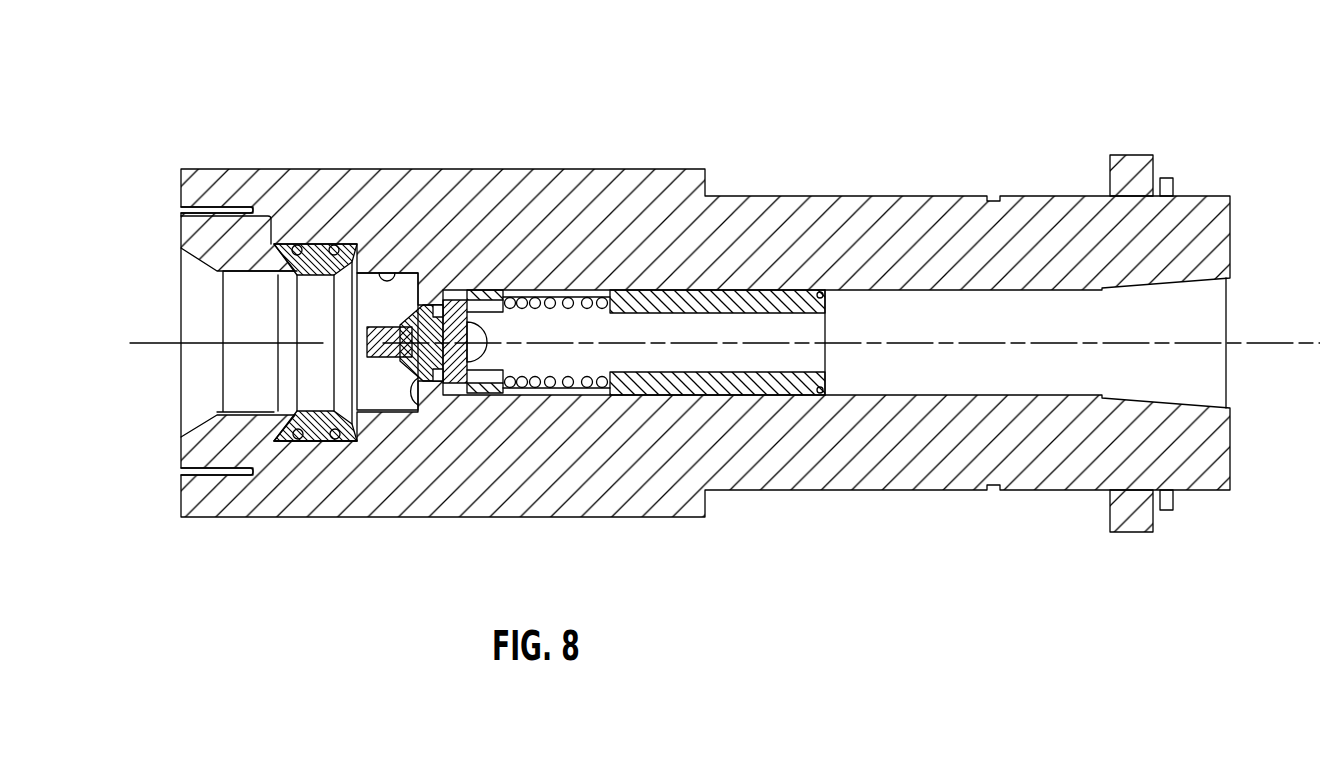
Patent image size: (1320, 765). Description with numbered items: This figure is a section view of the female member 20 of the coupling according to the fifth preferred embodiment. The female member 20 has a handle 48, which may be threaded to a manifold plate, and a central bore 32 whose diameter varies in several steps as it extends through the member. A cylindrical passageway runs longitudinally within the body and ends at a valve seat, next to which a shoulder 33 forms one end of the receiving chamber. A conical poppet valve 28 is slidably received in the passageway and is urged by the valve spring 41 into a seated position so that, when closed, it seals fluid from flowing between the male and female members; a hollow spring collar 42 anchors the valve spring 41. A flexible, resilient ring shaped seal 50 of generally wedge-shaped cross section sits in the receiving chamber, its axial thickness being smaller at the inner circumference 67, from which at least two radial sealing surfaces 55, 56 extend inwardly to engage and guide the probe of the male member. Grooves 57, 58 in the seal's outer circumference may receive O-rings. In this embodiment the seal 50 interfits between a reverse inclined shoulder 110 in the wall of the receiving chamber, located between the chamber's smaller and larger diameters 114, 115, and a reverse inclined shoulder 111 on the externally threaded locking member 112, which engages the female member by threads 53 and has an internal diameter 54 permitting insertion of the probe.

The female member 20 is at (693, 140).
The poppet valve 28 is at (437, 297).
The central bore 32 is at (768, 392).
The shoulder 33 is at (421, 400).
The valve spring 41 is at (596, 260).
The hollow spring collar 42 is at (568, 300).
The handle 48 is at (1038, 203).
The ring shaped seal 50 is at (313, 437).
The threads 53 is at (210, 472).
The internal diameter 54 is at (238, 412).
The radial sealing surface 55 is at (320, 277).
The radial sealing surface 56 is at (350, 273).
The groove 57 is at (298, 437).
The groove 58 is at (333, 437).
The inner circumference 67 is at (303, 407).
The reverse inclined shoulder 110 is at (350, 243).
The reverse inclined shoulder 111 is at (250, 222).
The externally threaded locking member 112 is at (205, 243).
The smaller diameter 114 is at (397, 275).
The larger diameter 115 is at (317, 243).